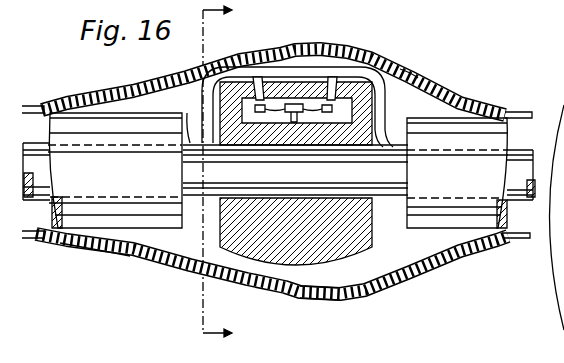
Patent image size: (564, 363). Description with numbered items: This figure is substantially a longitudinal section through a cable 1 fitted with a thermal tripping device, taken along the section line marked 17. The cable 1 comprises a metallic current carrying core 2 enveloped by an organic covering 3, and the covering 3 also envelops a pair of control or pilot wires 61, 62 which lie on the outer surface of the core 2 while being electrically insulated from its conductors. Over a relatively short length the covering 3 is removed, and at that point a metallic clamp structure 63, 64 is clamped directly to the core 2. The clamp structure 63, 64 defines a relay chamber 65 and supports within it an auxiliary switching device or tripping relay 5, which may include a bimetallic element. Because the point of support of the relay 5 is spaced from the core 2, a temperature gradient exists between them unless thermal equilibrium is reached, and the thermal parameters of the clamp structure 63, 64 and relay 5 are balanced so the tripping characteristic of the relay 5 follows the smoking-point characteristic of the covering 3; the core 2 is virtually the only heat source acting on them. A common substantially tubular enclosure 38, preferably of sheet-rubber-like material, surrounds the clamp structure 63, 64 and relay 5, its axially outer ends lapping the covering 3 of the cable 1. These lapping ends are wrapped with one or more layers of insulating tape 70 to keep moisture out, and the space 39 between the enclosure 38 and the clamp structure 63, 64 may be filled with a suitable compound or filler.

The cable 1 is at (109, 81).
The metallic current carrying core 2 is at (45, 201).
The organic covering 3 is at (55, 122).
The tripping relay 5 is at (190, 118).
The section line 17- 17 is at (215, 184).
The tubular enclosure 38 is at (291, 58).
The space 39 is at (378, 281).
The pilot wire 61 is at (403, 70).
The pilot wire 62 is at (390, 118).
The clamp structure 63 is at (295, 172).
The clamp structure 64 is at (220, 231).
The relay chamber 65 is at (307, 117).
The insulating tape 70 is at (126, 251).